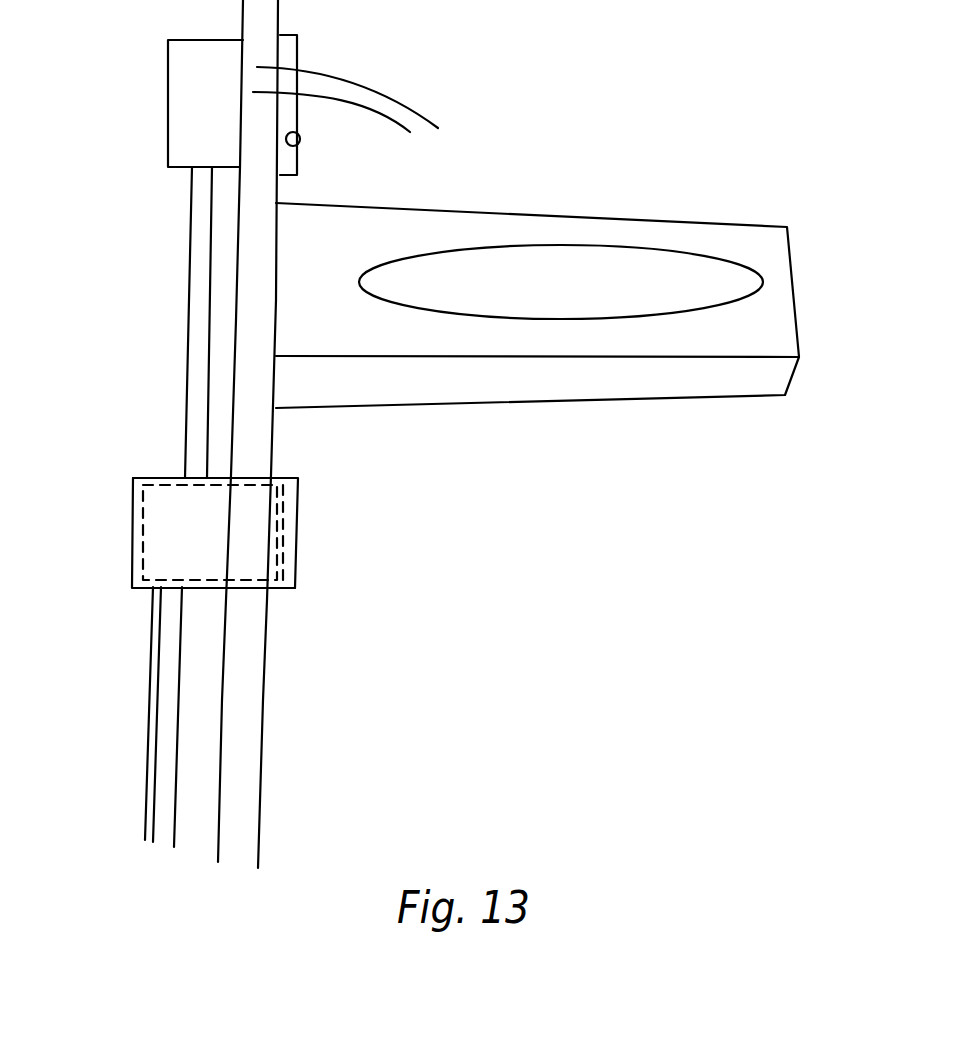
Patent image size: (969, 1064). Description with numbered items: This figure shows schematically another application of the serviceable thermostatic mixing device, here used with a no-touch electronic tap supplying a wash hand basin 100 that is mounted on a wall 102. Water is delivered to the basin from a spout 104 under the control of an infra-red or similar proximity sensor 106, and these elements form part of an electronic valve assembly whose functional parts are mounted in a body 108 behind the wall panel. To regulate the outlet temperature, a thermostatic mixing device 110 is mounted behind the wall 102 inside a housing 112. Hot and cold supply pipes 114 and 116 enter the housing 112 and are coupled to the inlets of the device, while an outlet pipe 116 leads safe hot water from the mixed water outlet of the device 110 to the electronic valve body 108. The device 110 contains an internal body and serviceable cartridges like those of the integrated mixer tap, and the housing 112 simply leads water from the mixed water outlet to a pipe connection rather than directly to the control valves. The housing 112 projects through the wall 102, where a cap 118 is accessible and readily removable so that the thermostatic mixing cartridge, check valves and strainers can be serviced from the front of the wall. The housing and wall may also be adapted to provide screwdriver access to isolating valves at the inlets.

The wash hand basin 100 is at (733, 303).
The wall 102 is at (263, 715).
The spout 104 is at (422, 125).
The proximity sensor 106 is at (300, 142).
The body 108 is at (167, 100).
The thermostatic mixing device 110 is at (137, 513).
The housing 112 is at (132, 588).
The hot supply pipe 114 is at (155, 729).
The cold supply pipe 116 is at (190, 290).
The cap 118 is at (298, 533).